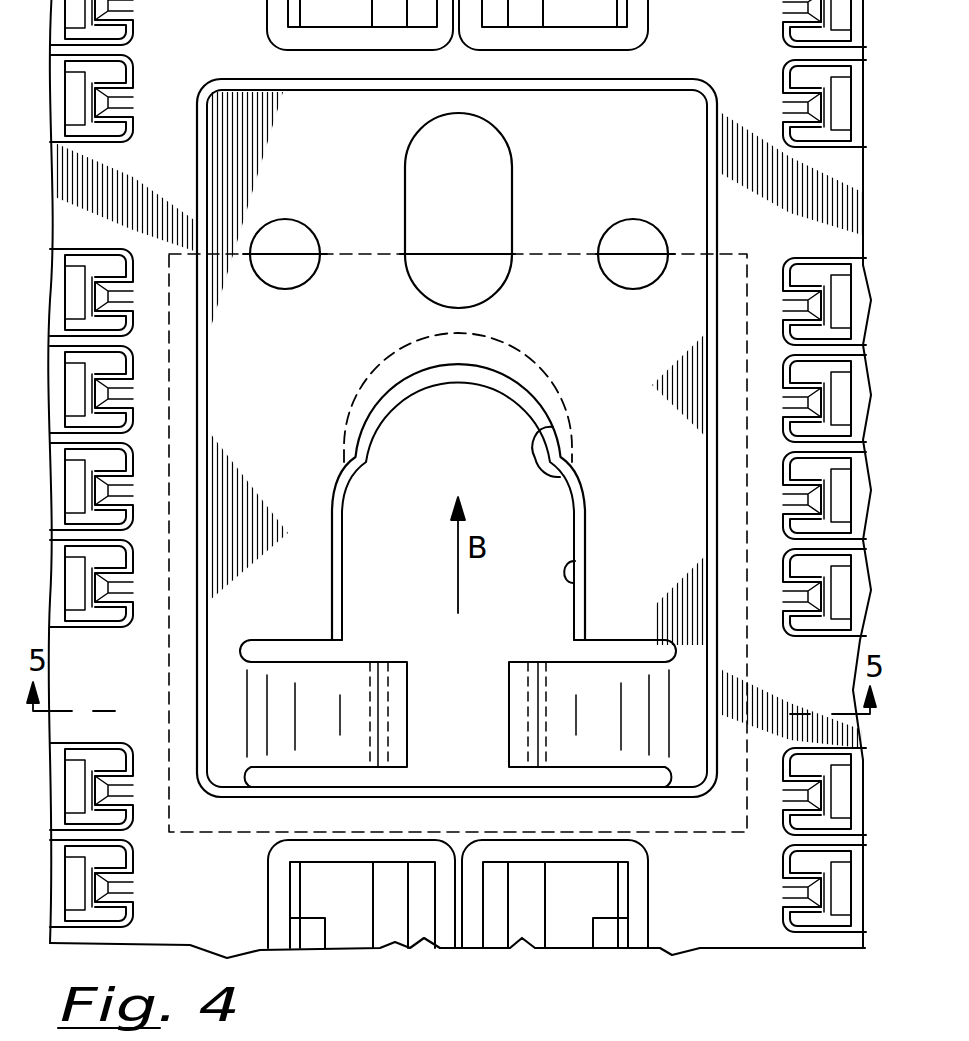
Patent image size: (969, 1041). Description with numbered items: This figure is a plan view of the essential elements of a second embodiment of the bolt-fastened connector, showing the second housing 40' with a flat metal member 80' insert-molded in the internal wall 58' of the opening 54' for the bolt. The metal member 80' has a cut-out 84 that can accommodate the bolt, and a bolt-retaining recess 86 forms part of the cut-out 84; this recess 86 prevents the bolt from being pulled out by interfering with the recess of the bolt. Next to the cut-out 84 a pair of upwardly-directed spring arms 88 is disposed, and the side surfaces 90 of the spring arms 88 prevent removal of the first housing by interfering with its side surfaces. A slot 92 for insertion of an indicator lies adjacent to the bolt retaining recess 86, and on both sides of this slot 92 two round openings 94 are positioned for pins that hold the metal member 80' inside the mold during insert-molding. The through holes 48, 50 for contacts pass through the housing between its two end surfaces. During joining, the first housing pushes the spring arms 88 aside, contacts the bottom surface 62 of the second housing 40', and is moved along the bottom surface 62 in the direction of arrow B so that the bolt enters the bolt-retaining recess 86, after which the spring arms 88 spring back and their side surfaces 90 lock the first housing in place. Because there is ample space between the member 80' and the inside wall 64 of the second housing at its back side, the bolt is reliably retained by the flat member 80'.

The second housing 40' is at (466, 402).
The flat metal member 80' is at (457, 438).
The slot 92 is at (509, 164).
The round openings 94 is at (292, 232).
The opening 54' is at (420, 502).
The internal wall 58' is at (453, 511).
The inside wall 64 is at (558, 390).
The bolt-retaining recess 86 is at (557, 473).
The cut-out 84 is at (573, 582).
The spring arms 88 is at (390, 706).
The side surfaces 90 is at (360, 668).
The bottom surface 62 is at (248, 593).
The through hole 50 is at (97, 912).
The through hole 48 is at (578, 890).